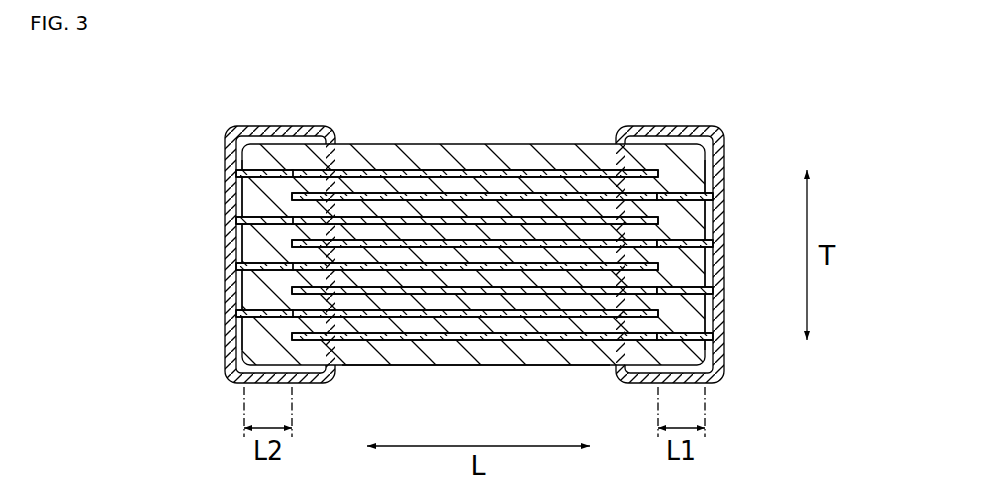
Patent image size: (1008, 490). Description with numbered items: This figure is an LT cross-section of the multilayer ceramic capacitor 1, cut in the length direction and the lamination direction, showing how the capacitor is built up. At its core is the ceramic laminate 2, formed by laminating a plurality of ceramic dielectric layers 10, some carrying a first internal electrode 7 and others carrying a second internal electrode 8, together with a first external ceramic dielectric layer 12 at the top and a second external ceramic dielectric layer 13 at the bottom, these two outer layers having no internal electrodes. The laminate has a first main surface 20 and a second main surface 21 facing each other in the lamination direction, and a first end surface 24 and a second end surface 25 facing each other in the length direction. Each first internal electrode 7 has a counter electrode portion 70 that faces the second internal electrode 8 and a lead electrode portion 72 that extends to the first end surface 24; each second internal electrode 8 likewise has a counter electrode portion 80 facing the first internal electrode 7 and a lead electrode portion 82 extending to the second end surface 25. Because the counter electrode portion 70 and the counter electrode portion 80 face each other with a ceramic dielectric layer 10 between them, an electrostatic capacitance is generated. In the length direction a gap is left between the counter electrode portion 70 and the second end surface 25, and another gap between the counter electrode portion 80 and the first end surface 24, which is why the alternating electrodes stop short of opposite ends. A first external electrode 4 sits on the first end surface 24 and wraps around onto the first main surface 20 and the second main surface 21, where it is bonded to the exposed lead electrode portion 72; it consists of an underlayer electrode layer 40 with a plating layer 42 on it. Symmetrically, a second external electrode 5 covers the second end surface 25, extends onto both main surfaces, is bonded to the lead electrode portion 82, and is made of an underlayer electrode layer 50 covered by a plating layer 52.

The multilayer ceramic capacitor 1 is at (161, 75).
The ceramic laminate 2 is at (357, 134).
The first external electrode 4 is at (234, 124).
The second external electrode 5 is at (719, 124).
The first internal electrode 7 is at (512, 315).
The second internal electrode 8 is at (606, 340).
The ceramic dielectric layer 10 is at (407, 328).
The first external ceramic dielectric layer 12 is at (440, 160).
The second external ceramic dielectric layer 13 is at (402, 348).
The first main surface 20 is at (397, 155).
The second main surface 21 is at (590, 367).
The first end surface 24 is at (240, 268).
The second end surface 25 is at (712, 280).
The underlayer electrode layer 40 is at (291, 140).
The plating layer 42 is at (266, 127).
The underlayer electrode layer 50 is at (660, 128).
The plating layer 52 is at (702, 127).
The counter electrode portion 70 is at (412, 165).
The lead electrode portion 72 is at (268, 181).
The counter electrode portion 80 is at (470, 190).
The lead electrode portion 82 is at (683, 185).